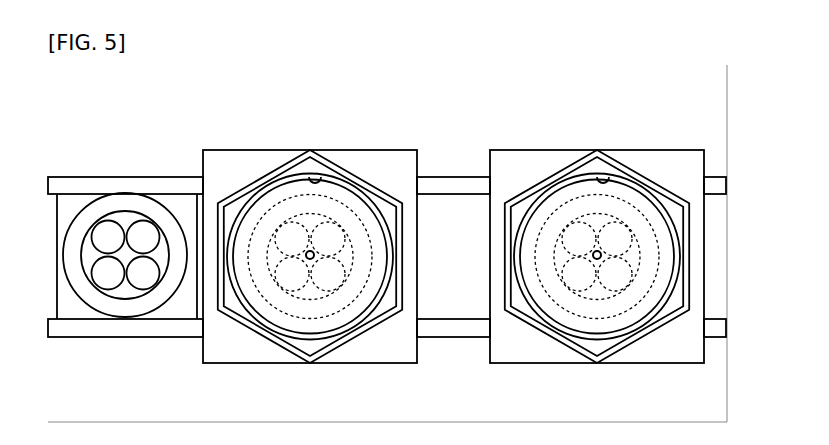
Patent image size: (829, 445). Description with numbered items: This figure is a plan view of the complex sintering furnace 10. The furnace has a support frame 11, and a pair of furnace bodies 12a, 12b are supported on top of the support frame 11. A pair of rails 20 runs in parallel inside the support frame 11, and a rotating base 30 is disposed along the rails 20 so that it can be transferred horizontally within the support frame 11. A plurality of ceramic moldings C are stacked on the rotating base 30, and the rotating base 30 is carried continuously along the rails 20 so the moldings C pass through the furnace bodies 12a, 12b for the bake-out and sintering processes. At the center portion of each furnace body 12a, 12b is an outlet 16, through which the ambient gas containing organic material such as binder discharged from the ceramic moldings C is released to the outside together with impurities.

The complex sintering furnace 10 is at (148, 132).
The support frame 11 is at (218, 353).
The furnace body 12a is at (314, 181).
The furnace body 12b is at (603, 181).
The outlet 16 is at (312, 252).
The rails 20 is at (452, 330).
The rotating base 30 is at (97, 302).
The ceramic molding C is at (147, 282).